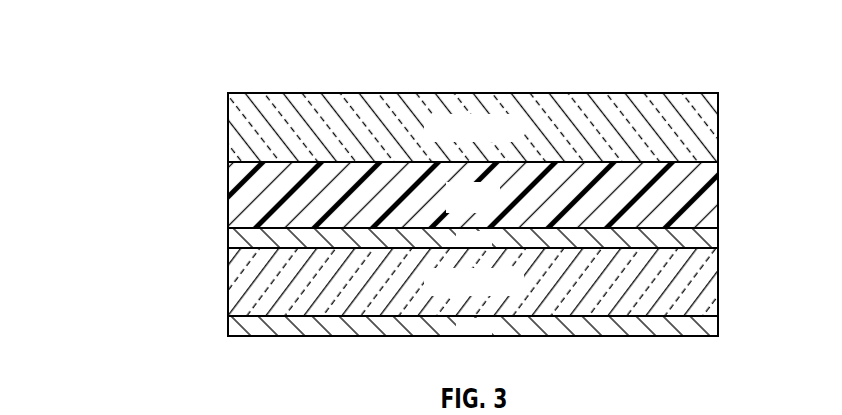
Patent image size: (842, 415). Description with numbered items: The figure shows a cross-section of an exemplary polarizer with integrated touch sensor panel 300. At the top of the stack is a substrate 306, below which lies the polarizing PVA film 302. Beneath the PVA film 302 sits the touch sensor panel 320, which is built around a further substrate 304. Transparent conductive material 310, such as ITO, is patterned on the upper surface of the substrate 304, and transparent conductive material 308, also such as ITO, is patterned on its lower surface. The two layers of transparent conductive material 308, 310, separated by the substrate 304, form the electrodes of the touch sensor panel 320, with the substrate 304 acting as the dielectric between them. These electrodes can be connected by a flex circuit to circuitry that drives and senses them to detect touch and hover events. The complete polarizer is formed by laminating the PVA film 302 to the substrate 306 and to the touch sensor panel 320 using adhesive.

The polarizer with integrated touch sensor panel 300 is at (96, 38).
The PVA film 302 is at (228, 197).
The substrate 304 is at (228, 283).
The substrate 306 is at (228, 118).
The transparent conductive material 308 is at (718, 326).
The transparent conductive material 310 is at (718, 239).
The touch sensor panel 320 is at (416, 293).